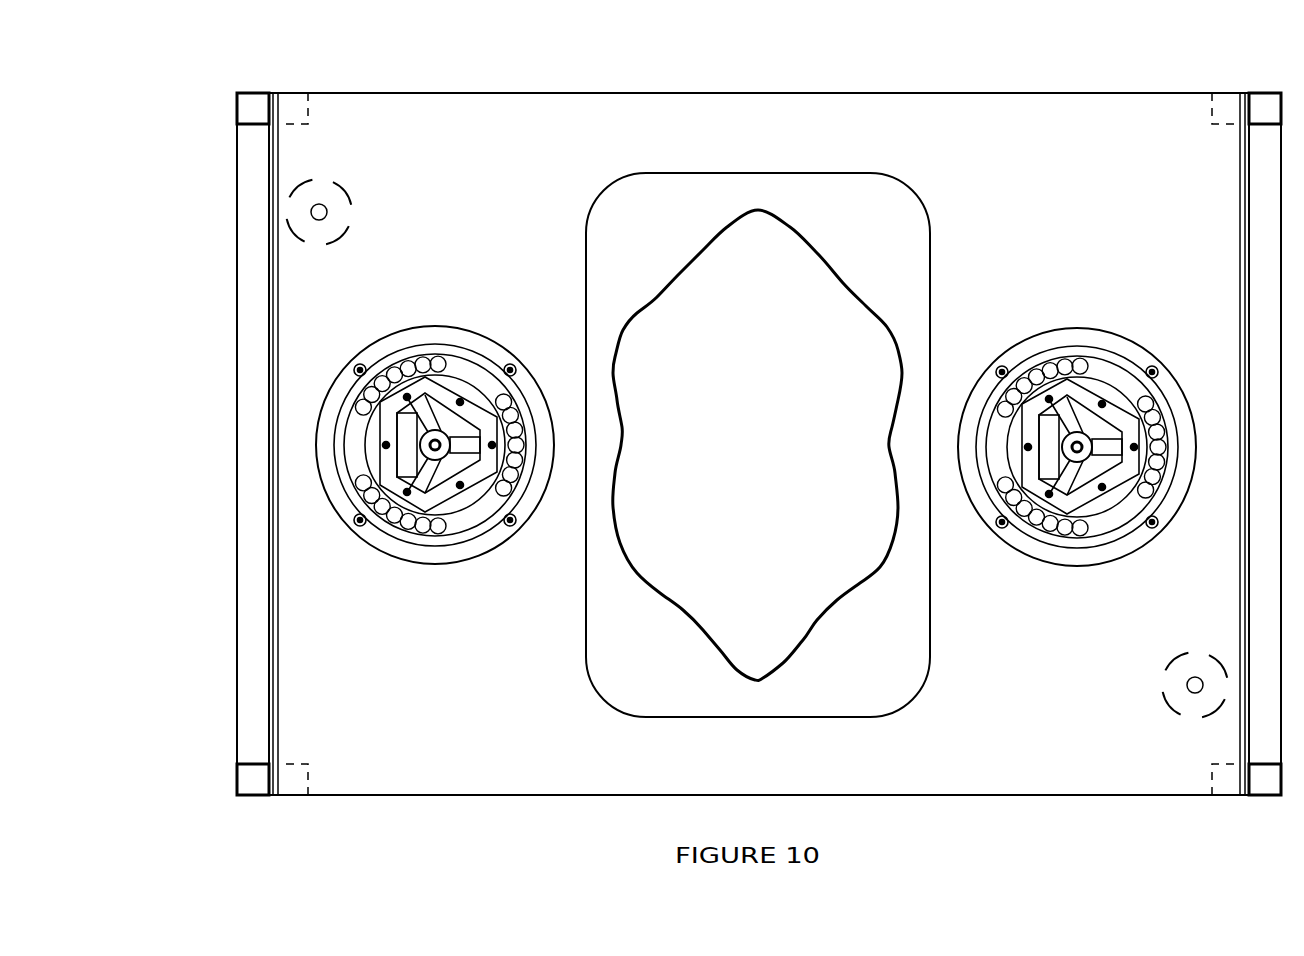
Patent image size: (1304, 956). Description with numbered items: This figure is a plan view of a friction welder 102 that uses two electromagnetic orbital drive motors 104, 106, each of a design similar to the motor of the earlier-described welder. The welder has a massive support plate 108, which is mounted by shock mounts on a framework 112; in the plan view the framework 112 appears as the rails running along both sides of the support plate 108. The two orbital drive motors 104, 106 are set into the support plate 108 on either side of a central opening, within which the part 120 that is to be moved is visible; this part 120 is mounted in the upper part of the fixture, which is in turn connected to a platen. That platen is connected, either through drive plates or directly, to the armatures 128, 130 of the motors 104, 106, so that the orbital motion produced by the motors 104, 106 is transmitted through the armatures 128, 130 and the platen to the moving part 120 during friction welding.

The friction welder 102 is at (697, 455).
The electromagnetic orbital drive motor 104 is at (436, 432).
The electromagnetic orbital drive motor 106 is at (1079, 433).
The support plate 108 is at (403, 765).
The framework 112 is at (235, 672).
The part to be moved 120 is at (812, 633).
The armature 128 is at (472, 519).
The armature 130 is at (1113, 521).